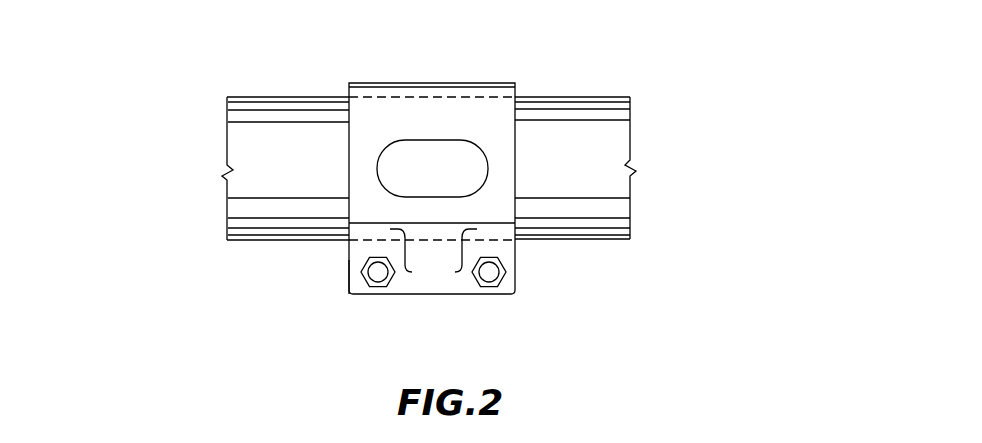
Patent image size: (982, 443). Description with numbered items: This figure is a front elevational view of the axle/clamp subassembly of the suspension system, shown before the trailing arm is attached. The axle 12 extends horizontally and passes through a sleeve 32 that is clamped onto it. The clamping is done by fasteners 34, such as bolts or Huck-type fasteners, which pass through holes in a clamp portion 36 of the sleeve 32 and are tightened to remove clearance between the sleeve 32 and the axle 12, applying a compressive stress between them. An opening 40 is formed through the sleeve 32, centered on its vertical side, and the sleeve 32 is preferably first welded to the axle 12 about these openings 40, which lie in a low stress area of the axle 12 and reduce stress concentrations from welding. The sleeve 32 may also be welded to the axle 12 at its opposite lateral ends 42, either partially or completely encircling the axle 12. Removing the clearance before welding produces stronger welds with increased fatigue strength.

The axle 12 is at (593, 97).
The sleeve 32 is at (448, 83).
The fasteners 34 is at (484, 290).
The clamp portion 36 is at (348, 274).
The openings 40 is at (389, 156).
The opposite lateral ends 42 is at (348, 170).